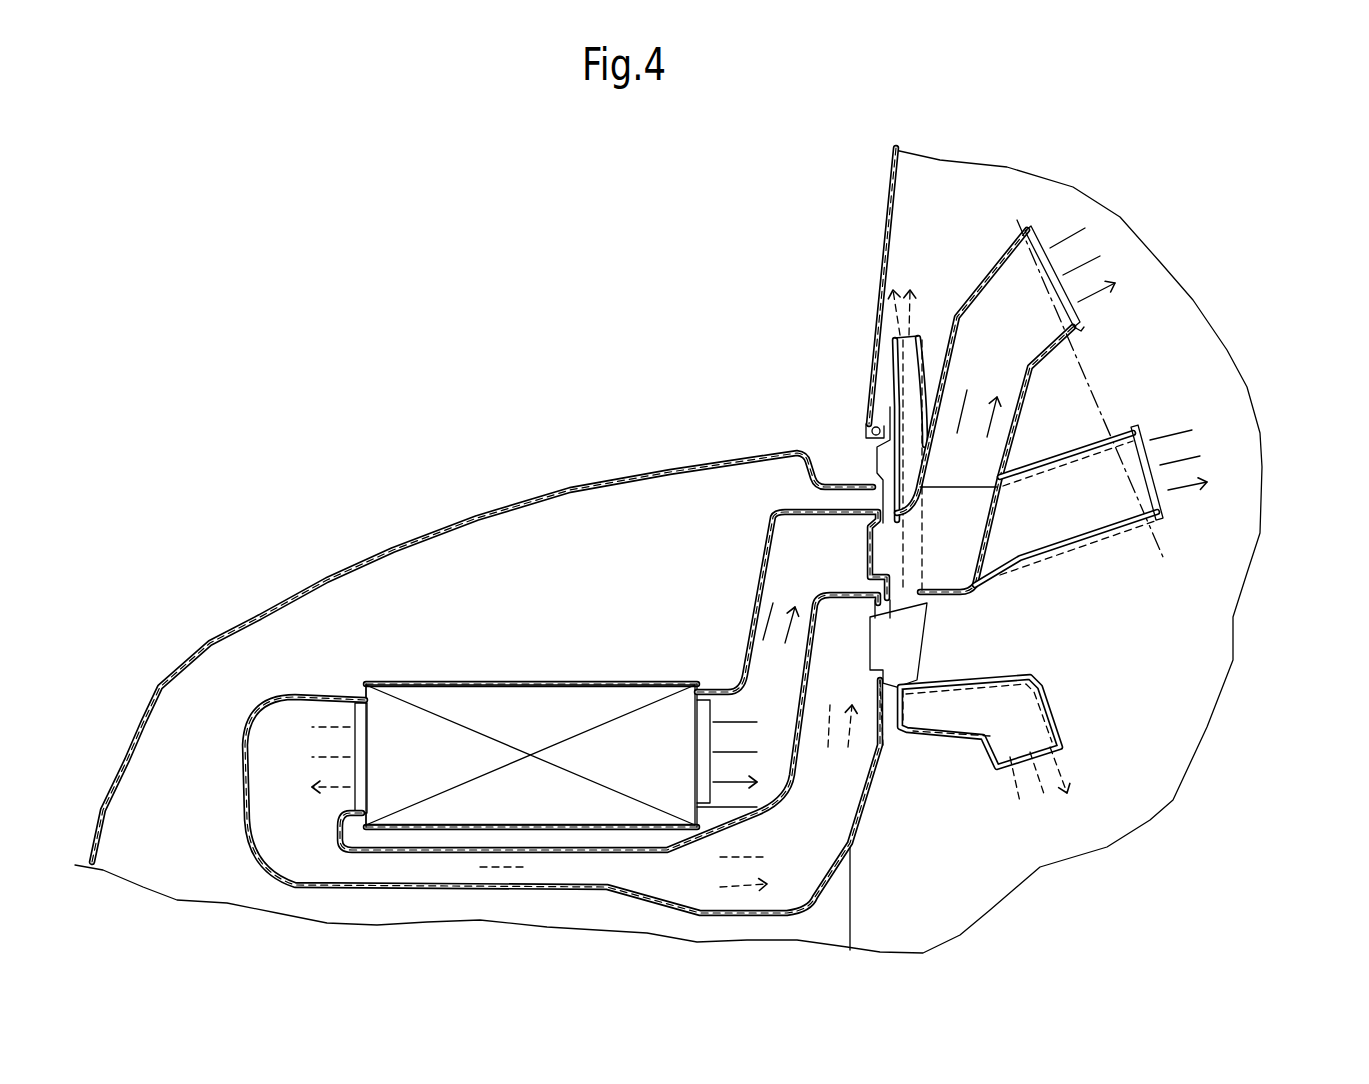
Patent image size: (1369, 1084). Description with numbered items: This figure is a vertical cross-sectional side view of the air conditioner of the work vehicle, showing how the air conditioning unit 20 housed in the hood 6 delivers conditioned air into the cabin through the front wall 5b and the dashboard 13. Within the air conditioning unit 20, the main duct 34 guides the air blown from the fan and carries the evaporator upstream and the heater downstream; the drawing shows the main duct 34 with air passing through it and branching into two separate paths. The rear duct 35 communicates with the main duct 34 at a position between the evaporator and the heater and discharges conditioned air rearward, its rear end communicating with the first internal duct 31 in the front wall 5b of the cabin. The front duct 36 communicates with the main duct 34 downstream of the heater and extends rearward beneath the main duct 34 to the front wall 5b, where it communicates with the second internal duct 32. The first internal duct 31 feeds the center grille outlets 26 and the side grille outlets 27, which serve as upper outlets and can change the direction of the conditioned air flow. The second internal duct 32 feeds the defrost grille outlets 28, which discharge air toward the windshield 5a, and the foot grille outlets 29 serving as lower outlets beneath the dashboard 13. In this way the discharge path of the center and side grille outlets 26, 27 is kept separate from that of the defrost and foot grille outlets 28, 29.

The hood 6 is at (423, 533).
The windshield 5a is at (882, 236).
The front wall 5b is at (851, 871).
The dashboard 13 is at (1097, 372).
The air conditioning unit 20 is at (470, 678).
The center grille outlets 26 is at (1040, 247).
The side grille outlets 27 is at (1160, 500).
The defrost grille outlets 28 is at (897, 340).
The foot grille outlets 29 is at (1007, 770).
The first internal duct 31 is at (965, 595).
The second internal duct 32 is at (927, 637).
The main duct 34 is at (587, 682).
The rear duct 35 is at (758, 586).
The front duct 36 is at (246, 818).